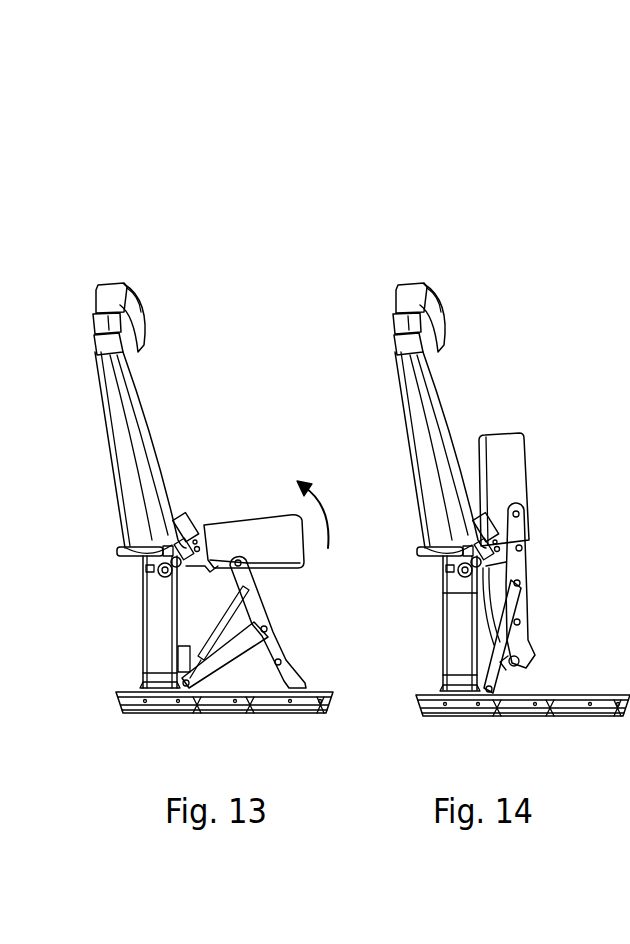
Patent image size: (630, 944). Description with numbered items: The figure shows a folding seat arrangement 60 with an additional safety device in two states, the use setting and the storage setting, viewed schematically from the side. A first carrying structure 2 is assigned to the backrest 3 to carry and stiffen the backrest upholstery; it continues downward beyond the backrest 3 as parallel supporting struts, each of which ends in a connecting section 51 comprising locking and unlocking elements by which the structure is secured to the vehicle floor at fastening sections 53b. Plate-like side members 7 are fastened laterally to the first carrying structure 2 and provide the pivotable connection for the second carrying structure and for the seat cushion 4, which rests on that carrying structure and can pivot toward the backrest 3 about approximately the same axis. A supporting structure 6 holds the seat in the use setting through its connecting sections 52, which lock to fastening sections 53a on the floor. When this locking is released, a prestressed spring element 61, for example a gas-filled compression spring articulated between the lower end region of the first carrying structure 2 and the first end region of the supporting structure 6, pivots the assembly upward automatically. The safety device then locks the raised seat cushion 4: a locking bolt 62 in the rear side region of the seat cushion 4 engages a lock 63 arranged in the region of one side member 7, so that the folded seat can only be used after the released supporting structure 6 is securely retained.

In FIG. 13, the seat 60 is at (158, 233).
In FIG. 14, the seat 60 is at (464, 218).
In FIG. 13, the first carrying structure 2 is at (156, 594).
In FIG. 13, the backrest 3 is at (143, 440).
In FIG. 14, the backrest 3 is at (440, 452).
In FIG. 14, the seat cushion 4 is at (512, 490).
In FIG. 13, the supporting structure 6 is at (273, 643).
In FIG. 14, the supporting structure 6 is at (520, 545).
In FIG. 13, the side members 7 is at (164, 544).
In FIG. 13, the connecting section 51 is at (157, 688).
In FIG. 14, the connecting section 51 is at (523, 726).
In FIG. 13, the connecting sections 52 is at (295, 682).
In FIG. 14, the connecting sections 52 is at (579, 719).
In FIG. 13, the fastening sections 53a is at (290, 695).
In FIG. 13, the fastening sections 53b is at (165, 700).
In FIG. 13, the spring element 61 is at (214, 631).
In FIG. 14, the spring element 61 is at (502, 630).
In FIG. 13, the locking bolt 62 is at (207, 543).
In FIG. 13, the lock 63 is at (190, 540).